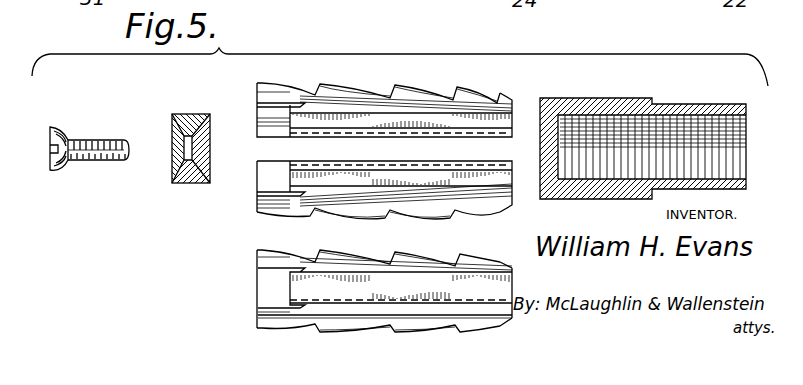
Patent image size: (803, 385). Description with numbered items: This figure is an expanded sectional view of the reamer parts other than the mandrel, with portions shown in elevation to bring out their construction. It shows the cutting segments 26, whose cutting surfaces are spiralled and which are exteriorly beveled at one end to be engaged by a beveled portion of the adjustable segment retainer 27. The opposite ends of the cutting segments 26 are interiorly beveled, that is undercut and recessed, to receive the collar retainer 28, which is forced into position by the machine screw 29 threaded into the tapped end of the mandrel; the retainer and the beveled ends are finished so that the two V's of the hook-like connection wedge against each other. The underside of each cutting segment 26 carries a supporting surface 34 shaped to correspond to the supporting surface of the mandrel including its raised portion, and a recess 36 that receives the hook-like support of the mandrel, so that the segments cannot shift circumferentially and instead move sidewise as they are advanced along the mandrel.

The cutting segments 26 is at (393, 196).
The adjustable segment retainer 27 is at (592, 199).
The collar retainer 28 is at (180, 184).
The machine screw 29 is at (56, 168).
The supporting surface 34 is at (408, 107).
The recess 36 is at (362, 133).